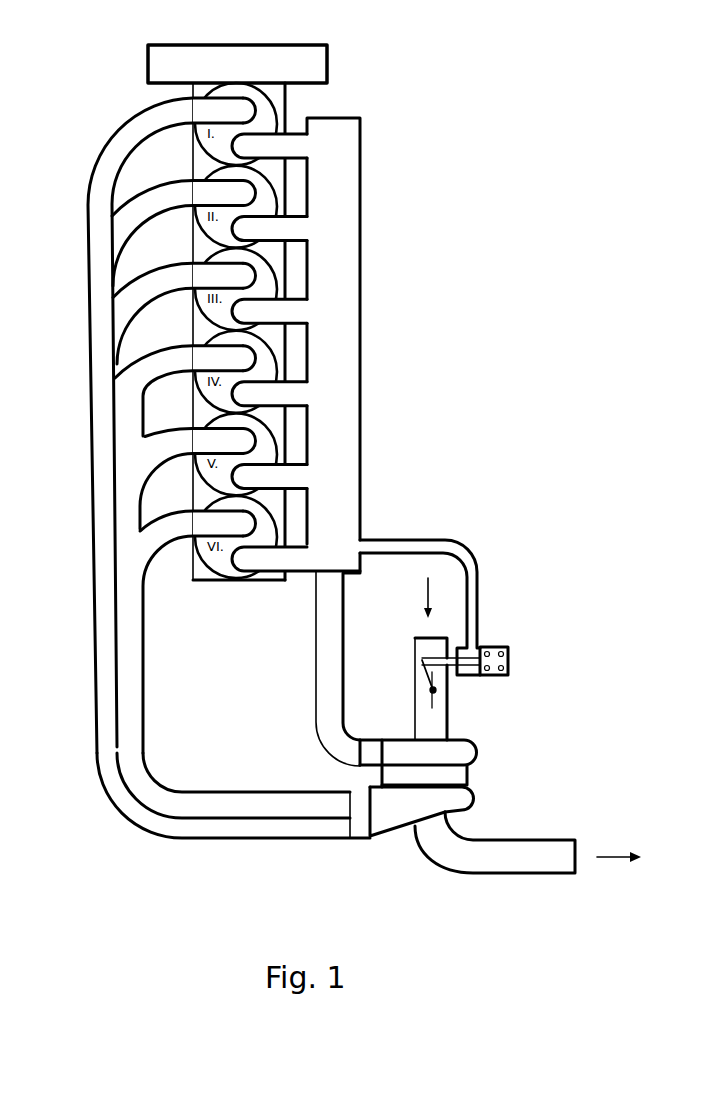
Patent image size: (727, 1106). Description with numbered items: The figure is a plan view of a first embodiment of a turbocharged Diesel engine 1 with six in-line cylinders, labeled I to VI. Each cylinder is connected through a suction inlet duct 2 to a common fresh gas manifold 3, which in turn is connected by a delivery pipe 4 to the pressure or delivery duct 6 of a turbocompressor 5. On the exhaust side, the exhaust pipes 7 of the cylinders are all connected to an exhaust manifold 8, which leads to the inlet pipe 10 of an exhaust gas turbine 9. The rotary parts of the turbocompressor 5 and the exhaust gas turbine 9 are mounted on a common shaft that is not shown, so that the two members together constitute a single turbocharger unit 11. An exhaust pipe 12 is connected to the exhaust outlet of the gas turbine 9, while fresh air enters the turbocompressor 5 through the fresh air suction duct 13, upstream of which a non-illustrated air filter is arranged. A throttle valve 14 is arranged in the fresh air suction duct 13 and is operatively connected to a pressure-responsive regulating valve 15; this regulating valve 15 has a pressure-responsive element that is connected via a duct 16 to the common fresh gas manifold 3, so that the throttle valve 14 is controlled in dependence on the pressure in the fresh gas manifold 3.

The engine 1 is at (266, 60).
The suction inlet ducts 2 is at (278, 144).
The common fresh gas manifold 3 is at (342, 203).
The delivery pipe 4 is at (323, 652).
The turbocompressor 5 is at (477, 747).
The pressure or delivery duct 6 is at (367, 762).
The exhaust pipes 7 is at (152, 449).
The exhaust manifold 8 is at (125, 752).
The exhaust gas turbine 9 is at (405, 810).
The inlet pipe 10 is at (362, 808).
The turbocharger unit 11 is at (463, 777).
The exhaust pipe 12 is at (518, 860).
The fresh air suction duct 13 is at (440, 722).
The throttle valve 14 is at (418, 697).
The pressure-responsive regulating valve 15 is at (497, 646).
The duct 16 is at (430, 546).